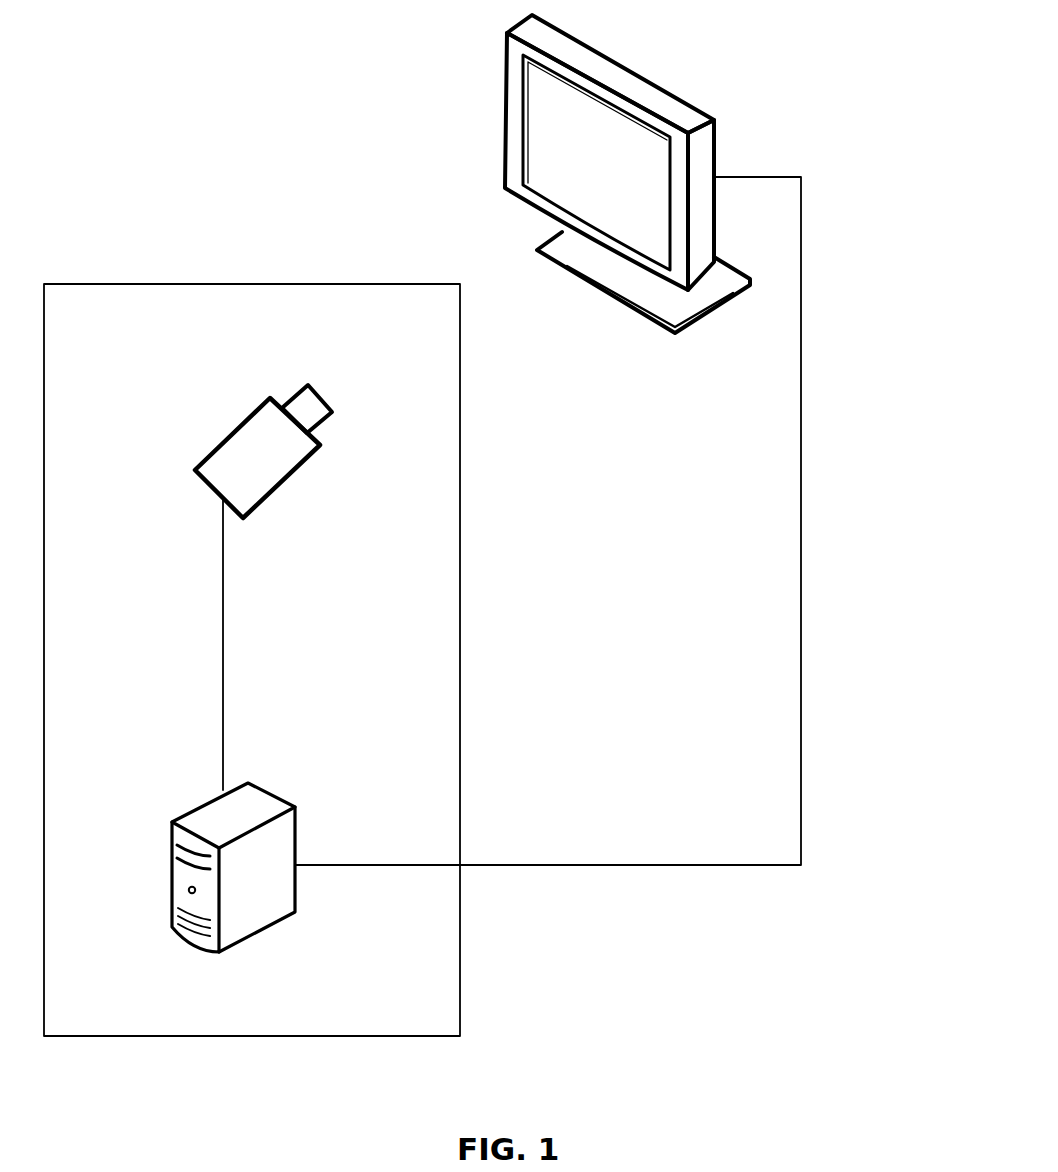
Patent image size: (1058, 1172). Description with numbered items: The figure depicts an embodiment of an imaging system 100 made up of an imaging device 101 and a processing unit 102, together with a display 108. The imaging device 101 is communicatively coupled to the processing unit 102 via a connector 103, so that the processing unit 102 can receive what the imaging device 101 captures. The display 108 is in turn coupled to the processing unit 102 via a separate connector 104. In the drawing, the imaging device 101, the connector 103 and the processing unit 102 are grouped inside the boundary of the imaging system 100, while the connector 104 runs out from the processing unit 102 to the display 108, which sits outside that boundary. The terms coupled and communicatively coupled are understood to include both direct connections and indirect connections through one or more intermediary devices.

The imaging system 100 is at (119, 332).
The imaging device 101 is at (220, 410).
The processing unit 102 is at (282, 932).
The connector 103 is at (240, 622).
The connector 104 is at (813, 512).
The display 108 is at (638, 48).